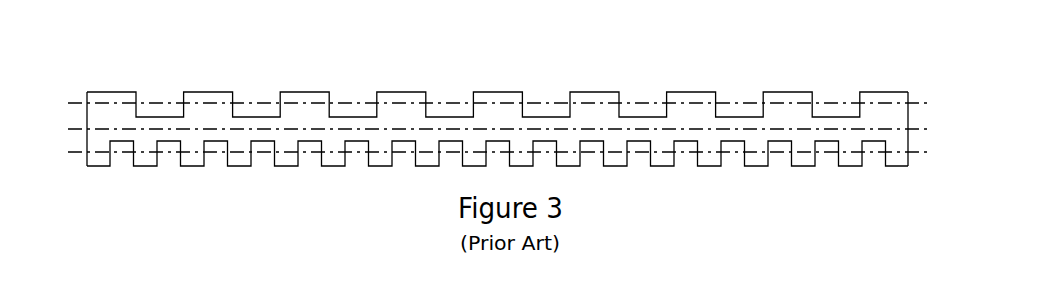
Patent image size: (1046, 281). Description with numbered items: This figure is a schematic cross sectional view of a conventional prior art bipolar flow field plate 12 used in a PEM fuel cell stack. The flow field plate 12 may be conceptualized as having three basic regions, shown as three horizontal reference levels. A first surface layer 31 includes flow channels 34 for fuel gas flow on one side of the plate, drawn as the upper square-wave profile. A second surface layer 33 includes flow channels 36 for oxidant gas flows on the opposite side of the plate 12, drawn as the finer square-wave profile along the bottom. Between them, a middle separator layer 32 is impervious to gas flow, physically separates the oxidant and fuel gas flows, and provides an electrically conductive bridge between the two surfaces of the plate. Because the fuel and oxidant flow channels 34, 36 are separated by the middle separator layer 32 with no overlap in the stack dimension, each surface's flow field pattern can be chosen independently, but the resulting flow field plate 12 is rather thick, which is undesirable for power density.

The flow field plate 12 is at (222, 65).
The first surface layer 31 is at (486, 104).
The middle separator layer 32 is at (486, 129).
The second surface layer 33 is at (486, 153).
The flow channels 34 is at (353, 100).
The flow channels 36 is at (355, 153).